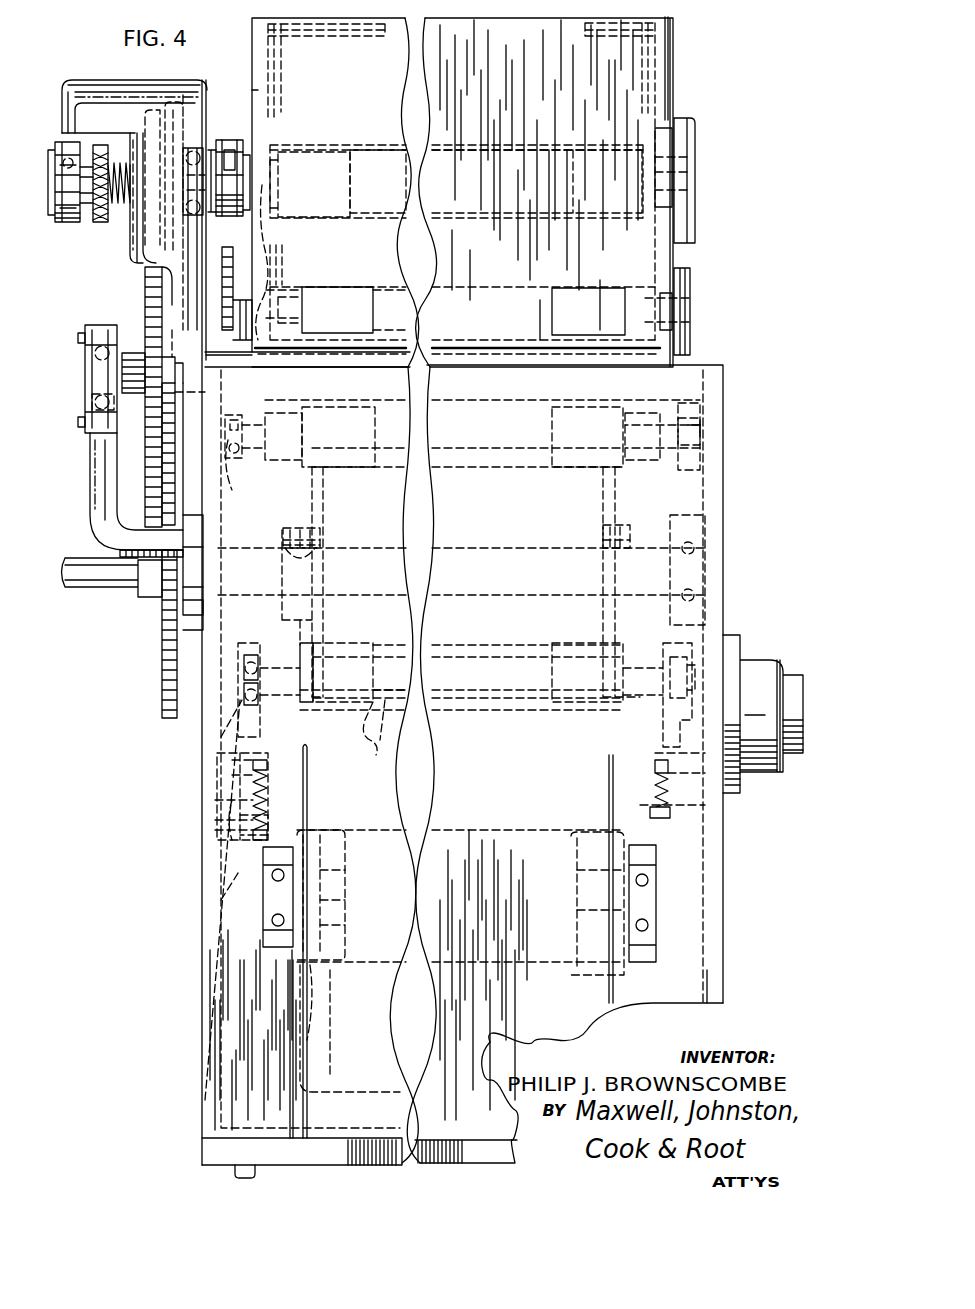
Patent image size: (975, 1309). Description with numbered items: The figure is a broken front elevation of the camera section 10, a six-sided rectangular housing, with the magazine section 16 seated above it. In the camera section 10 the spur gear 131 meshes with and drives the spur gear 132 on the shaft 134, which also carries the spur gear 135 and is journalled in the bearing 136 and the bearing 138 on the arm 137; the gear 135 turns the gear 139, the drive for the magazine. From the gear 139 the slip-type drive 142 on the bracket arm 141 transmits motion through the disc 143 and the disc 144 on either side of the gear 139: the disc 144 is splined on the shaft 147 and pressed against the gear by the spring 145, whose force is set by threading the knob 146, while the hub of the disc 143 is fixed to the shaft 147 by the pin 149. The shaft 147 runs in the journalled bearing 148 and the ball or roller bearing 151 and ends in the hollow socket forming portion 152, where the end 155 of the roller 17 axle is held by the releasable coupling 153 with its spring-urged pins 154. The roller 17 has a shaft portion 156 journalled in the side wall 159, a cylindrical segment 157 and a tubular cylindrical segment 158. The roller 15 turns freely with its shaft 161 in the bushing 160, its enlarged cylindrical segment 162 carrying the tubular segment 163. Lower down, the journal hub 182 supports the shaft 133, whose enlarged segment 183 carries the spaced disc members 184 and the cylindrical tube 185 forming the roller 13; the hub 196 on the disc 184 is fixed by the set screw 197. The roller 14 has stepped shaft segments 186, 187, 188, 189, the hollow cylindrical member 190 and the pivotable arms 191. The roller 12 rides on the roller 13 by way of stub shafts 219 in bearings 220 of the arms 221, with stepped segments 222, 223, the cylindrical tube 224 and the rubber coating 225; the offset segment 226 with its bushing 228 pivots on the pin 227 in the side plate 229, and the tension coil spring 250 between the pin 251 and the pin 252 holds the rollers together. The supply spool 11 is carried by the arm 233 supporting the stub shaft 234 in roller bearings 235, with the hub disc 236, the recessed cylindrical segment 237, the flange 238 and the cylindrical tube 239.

The camera section 10 is at (198, 888).
The spool 11 is at (355, 982).
The roller 12 is at (312, 642).
The roller 13 is at (306, 512).
The roller 14 is at (292, 472).
The roller 15 is at (337, 286).
The magazine section 16 is at (250, 62).
The roller 17 is at (316, 146).
The spur gear 131 is at (162, 676).
The spur gear 132 is at (178, 412).
The shaft 133 is at (100, 588).
The shaft 134 is at (83, 380).
The spur gear 135 is at (145, 305).
The bearing 136 is at (183, 361).
The arm 137 is at (92, 478).
The bearing 138 is at (90, 406).
The gear 139 is at (138, 262).
The bracket arm 141 is at (100, 80).
The slip-type drive 142 is at (130, 250).
The disc 143 is at (176, 102).
The disc 144 is at (145, 112).
The spring 145 is at (120, 205).
The knob 146 is at (98, 222).
The shaft 147 is at (48, 183).
The journalled bearing 148 is at (64, 222).
The pin 149 is at (181, 239).
The ball or roller bearing 151 is at (243, 146).
The hollow socket forming portion 152 is at (218, 228).
The releasable coupling 153 is at (212, 138).
The pins 154 is at (228, 145).
The end of the axle 155 is at (271, 262).
The shaft portion 156 is at (278, 180).
The cylindrical segment 157 is at (342, 190).
The tubular cylindrical segment 158 is at (372, 147).
The side wall 159 is at (252, 88).
The bushing 160 is at (275, 287).
The shaft 161 is at (252, 367).
The enlarged cylindrical segment 162 is at (592, 317).
The tubular cylindrical segment 163 is at (385, 288).
The journal hub 182 is at (204, 530).
The enlarged segment 183 is at (386, 550).
The disc members 184 is at (324, 496).
The cylindrical tube 185 is at (336, 447).
The shaft segment 186 is at (245, 456).
The shaft segment 187 is at (230, 414).
The shaft segment 188 is at (290, 412).
The shaft segment 189 is at (306, 427).
The hollow cylindrical member 190 is at (378, 400).
The pivotable arms 191 is at (240, 420).
The hub / bearing 196 is at (735, 408).
The set screw 197 is at (318, 530).
The stub shafts 219 is at (250, 695).
The bearings 220 is at (245, 645).
The arms 221 is at (258, 652).
The stepped segment 222 is at (272, 670).
The stepped segment 223 is at (343, 655).
The cylindrical tube 224 is at (385, 640).
The rubber coating 225 is at (386, 742).
The segment of the arm 226 is at (220, 790).
The pin 227 is at (230, 815).
The bushing 228 is at (215, 808).
The side plate 229 is at (203, 903).
The arm 233 is at (346, 945).
The stub shaft 234 is at (262, 890).
The roller bearings 235 is at (270, 935).
The hub disc 236 is at (346, 848).
The recessed cylindrical segment 237 is at (347, 885).
The flange 238 is at (310, 790).
The cylindrical tube 239 is at (442, 830).
The tension coil spring 250 is at (268, 812).
The pin 251 is at (262, 838).
The pin 252 is at (217, 770).